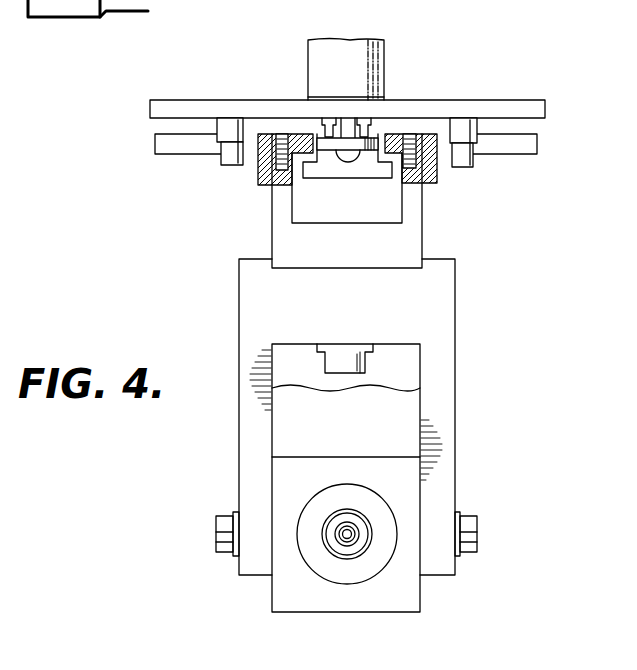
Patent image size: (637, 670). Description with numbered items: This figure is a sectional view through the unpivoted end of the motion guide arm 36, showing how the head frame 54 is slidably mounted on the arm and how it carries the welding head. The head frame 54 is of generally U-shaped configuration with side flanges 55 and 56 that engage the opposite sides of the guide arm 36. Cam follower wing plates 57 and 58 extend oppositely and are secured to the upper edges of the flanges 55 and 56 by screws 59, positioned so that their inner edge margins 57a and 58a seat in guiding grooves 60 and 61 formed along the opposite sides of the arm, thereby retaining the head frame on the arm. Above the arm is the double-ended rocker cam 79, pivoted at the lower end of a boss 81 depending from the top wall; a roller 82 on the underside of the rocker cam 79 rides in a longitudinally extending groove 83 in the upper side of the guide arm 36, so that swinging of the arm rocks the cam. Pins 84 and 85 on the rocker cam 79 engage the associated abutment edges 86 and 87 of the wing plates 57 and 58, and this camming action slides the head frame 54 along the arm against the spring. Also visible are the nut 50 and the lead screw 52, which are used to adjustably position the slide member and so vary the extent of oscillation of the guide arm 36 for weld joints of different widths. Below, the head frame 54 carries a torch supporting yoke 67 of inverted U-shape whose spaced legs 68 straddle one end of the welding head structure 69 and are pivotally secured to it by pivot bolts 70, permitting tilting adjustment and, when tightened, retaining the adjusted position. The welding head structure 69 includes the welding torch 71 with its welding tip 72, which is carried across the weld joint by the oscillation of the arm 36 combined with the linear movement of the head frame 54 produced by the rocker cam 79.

The motion guide arm 36 is at (406, 207).
The nut 50 is at (333, 159).
The lead screw 52 is at (352, 155).
The head frame 54 is at (271, 212).
The side flange 55 is at (275, 184).
The side flange 56 is at (423, 176).
The wing plate 57 is at (174, 155).
The inner edge margin 57a is at (303, 137).
The wing plate 58 is at (527, 155).
The inner edge margin 58a is at (396, 140).
The screw 59 is at (283, 136).
The guiding groove 60 is at (304, 122).
The guiding groove 61 is at (383, 165).
The torch supporting yoke 67 is at (237, 320).
The leg 68 is at (250, 431).
The welding head structure 69 is at (424, 588).
The pivot bolt 70 is at (222, 536).
The welding torch 71 is at (372, 486).
The welding tip 72 is at (347, 524).
The rocker cam 79 is at (505, 99).
The boss 81 is at (384, 50).
The roller 82 is at (345, 136).
The groove 83 is at (373, 176).
The pin 84 is at (228, 122).
The pin 85 is at (465, 128).
The abutment edge 86 is at (162, 143).
The abutment edge 87 is at (538, 144).